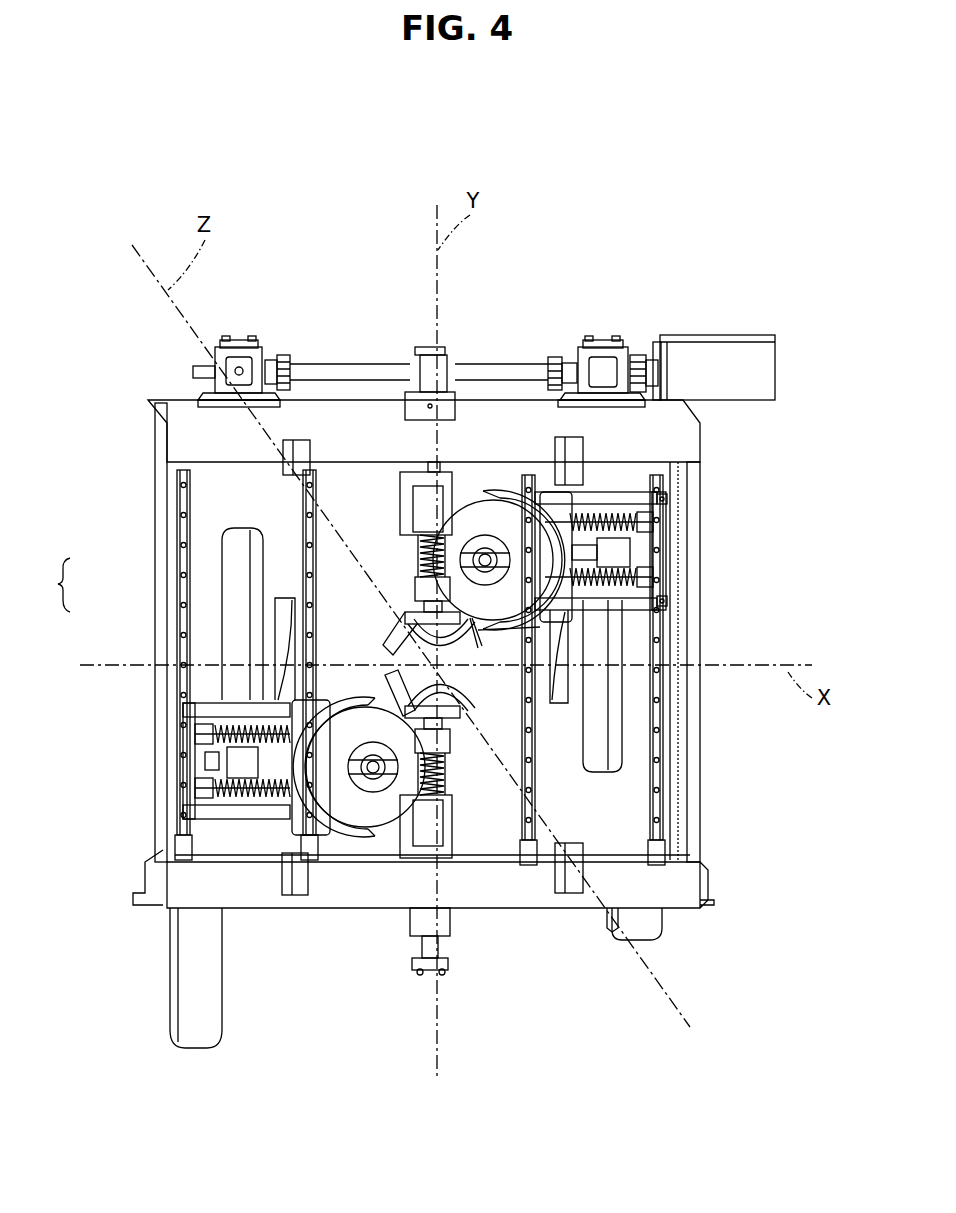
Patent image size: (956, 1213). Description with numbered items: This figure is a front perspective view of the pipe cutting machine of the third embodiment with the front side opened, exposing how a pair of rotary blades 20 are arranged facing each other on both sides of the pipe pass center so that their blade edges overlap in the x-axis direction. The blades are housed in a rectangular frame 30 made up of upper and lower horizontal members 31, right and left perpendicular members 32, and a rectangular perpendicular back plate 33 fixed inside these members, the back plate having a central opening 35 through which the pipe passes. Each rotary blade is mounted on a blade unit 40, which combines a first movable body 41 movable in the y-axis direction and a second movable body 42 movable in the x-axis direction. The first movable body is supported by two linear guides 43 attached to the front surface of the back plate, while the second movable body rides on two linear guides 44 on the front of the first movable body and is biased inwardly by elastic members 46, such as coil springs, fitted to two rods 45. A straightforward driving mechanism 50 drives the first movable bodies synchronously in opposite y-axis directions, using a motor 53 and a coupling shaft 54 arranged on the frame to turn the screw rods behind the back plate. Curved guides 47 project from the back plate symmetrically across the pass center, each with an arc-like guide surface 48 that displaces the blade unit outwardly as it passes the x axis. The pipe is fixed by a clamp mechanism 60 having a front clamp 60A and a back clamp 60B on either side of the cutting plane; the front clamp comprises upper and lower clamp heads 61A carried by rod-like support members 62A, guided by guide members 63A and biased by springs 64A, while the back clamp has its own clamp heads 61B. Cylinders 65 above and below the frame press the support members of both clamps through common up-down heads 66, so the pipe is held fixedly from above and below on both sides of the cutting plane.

The rotary blade 20 is at (490, 505).
The frame 30 is at (705, 500).
The horizontal member 31 is at (683, 440).
The perpendicular member 32 is at (700, 660).
The back plate 33 is at (368, 460).
The opening 35 is at (185, 512).
The blade unit 40 is at (612, 490).
The first movable body 41 is at (648, 565).
The second movable body 42 is at (668, 640).
The linear guide 43 is at (682, 770).
The linear guide 44 is at (664, 510).
The rod 45 is at (655, 525).
The elastic member 46 is at (664, 495).
The curved guide 47 is at (185, 737).
The guide surface 48 is at (320, 695).
The straightforward driving mechanism 50 is at (632, 336).
The motor 53 is at (722, 337).
The coupling shaft 54 is at (343, 480).
The clamp mechanism 60 is at (53, 585).
The front clamp 60A is at (300, 622).
The back clamp 60B is at (310, 583).
The clamp head 61A is at (553, 480).
The clamp head 61B is at (248, 640).
The support member 62A is at (545, 500).
The guide member 63A is at (352, 470).
The spring 64A is at (482, 500).
The cylinder 65 is at (428, 345).
The up-down head 66 is at (420, 468).